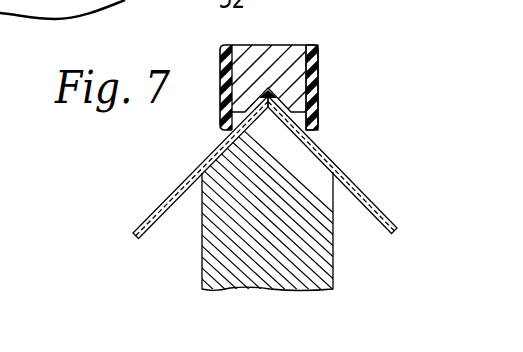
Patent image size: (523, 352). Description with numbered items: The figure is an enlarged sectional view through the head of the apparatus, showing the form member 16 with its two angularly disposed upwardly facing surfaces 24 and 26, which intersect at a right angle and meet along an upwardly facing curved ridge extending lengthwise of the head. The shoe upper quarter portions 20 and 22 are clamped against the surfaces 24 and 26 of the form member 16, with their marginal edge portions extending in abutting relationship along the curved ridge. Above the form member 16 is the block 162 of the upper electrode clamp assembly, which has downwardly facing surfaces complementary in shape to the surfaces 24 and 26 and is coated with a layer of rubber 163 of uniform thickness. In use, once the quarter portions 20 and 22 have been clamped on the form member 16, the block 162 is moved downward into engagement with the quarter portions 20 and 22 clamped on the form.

The form member 16 is at (333, 268).
The quarter portion 20 is at (156, 210).
The quarter portion 22 is at (380, 208).
The surface 24 is at (213, 153).
The surface 26 is at (325, 154).
The block 162 is at (291, 45).
The layer of rubber 163 is at (318, 84).